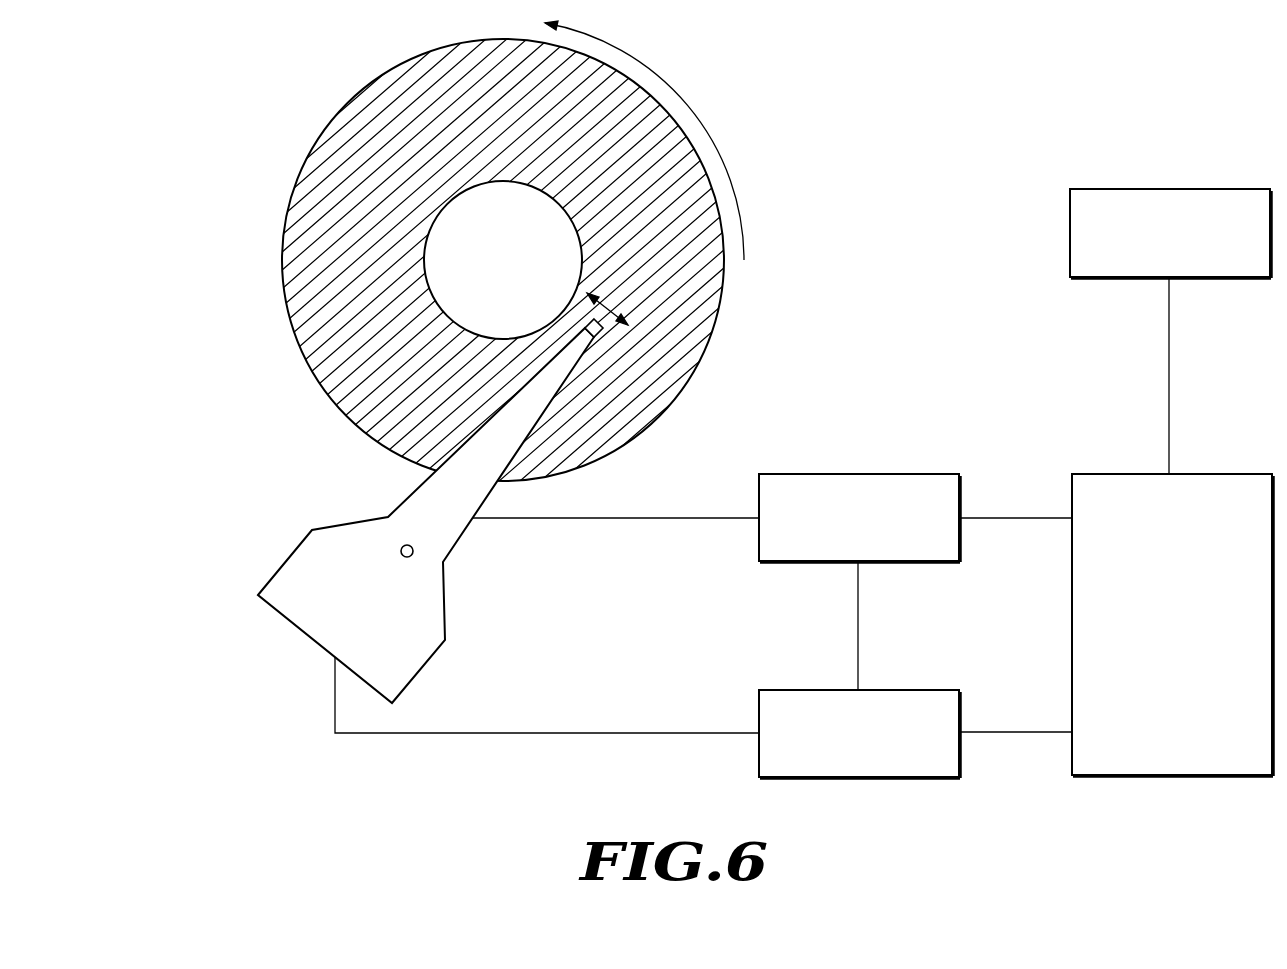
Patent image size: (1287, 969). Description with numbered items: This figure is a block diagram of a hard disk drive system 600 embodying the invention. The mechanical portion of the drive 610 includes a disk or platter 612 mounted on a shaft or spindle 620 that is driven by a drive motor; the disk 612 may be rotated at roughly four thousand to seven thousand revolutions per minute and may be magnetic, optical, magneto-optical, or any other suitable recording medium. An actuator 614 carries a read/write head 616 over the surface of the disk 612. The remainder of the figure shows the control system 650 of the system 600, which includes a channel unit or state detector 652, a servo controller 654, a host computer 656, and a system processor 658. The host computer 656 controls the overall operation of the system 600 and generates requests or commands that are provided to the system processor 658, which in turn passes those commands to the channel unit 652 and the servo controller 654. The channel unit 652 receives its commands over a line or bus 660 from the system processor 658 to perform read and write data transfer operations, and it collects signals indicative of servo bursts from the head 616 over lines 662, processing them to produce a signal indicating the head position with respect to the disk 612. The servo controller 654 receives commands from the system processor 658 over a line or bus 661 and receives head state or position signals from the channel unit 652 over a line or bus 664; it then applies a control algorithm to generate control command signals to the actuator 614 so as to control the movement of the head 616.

The hard disk drive system 600 is at (931, 118).
The disk drive 610 is at (186, 602).
The disk 612 is at (363, 137).
The actuator 614 is at (285, 563).
The read/write head 616 is at (605, 335).
The spindle 620 is at (442, 285).
The control system 650 is at (872, 387).
The channel unit 652 is at (905, 474).
The servo controller 654 is at (905, 690).
The host computer 656 is at (1220, 278).
The system processor 658 is at (1233, 704).
The line or bus 660 is at (994, 518).
The line or bus 661 is at (994, 732).
The lines 662 is at (623, 517).
The line or bus 664 is at (857, 627).